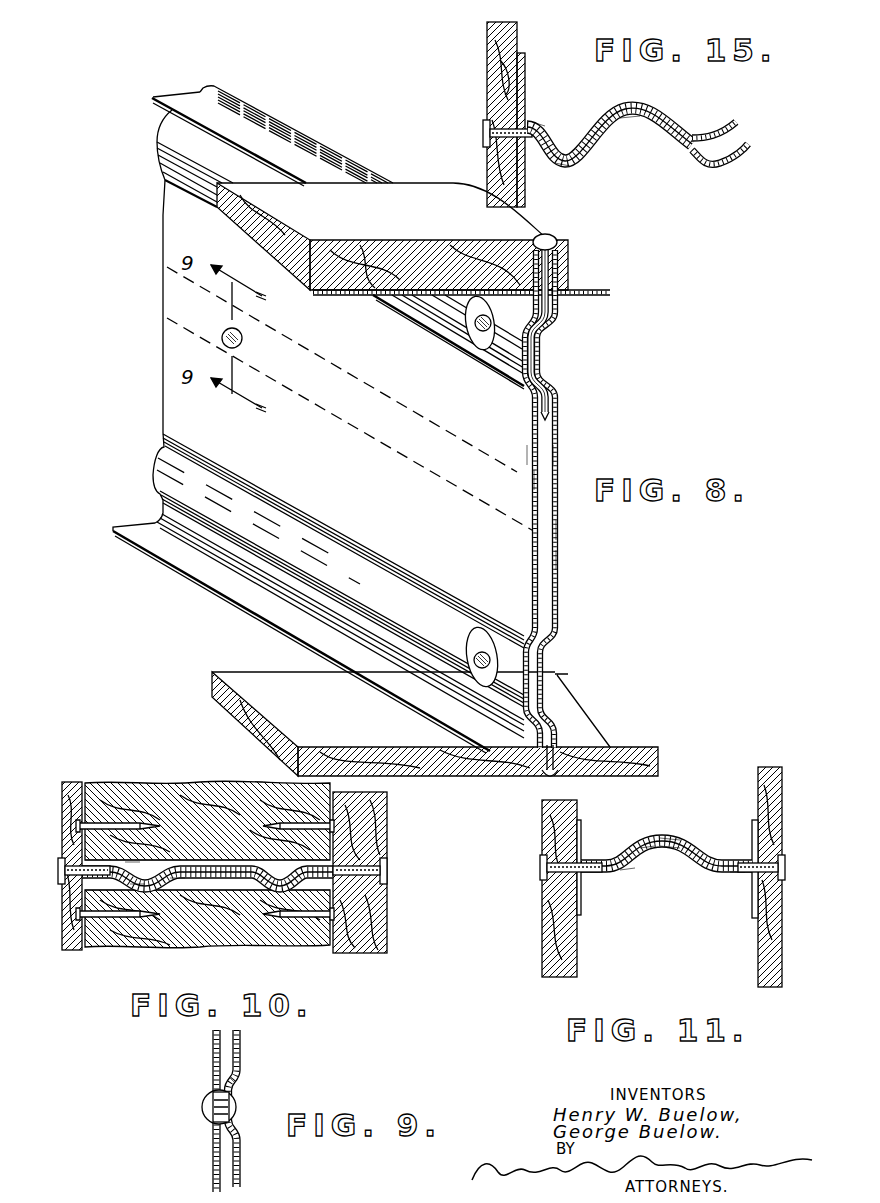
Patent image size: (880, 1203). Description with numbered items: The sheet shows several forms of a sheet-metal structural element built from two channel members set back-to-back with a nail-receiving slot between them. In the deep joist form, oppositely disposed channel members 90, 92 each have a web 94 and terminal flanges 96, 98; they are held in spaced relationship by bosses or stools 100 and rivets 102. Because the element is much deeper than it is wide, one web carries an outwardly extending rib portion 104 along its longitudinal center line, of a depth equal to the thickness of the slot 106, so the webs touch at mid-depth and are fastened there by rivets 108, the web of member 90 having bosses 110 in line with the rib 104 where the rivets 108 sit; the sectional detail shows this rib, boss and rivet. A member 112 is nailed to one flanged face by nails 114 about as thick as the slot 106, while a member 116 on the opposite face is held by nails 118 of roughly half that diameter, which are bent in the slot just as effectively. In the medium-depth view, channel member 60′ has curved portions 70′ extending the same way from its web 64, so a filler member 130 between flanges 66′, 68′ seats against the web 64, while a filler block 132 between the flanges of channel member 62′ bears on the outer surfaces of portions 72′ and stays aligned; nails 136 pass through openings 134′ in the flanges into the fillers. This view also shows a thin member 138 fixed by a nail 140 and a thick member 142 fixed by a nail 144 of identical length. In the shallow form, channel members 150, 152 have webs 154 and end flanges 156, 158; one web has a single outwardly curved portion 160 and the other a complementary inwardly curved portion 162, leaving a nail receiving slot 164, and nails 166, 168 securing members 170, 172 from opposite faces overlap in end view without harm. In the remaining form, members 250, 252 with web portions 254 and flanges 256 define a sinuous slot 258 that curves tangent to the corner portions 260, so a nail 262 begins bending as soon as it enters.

In FIG. 8, the channel member 90 is at (558, 435).
In FIG. 9, the channel member 90 is at (243, 1164).
In FIG. 8, the channel member 92 is at (531, 433).
In FIG. 9, the channel member 92 is at (212, 1174).
In FIG. 8, the web 94 is at (532, 452).
In FIG. 9, the web 94 is at (212, 1050).
In FIG. 8, the terminal flange 96 is at (580, 297).
In FIG. 8, the terminal flange 98 is at (612, 746).
In FIG. 8, the boss or stool 100 is at (478, 344).
In FIG. 8, the rivet 102 is at (477, 326).
In FIG. 8, the rib portion 104 is at (549, 534).
In FIG. 8, the slot 106 is at (538, 475).
In FIG. 8, the rivet 108 is at (242, 339).
In FIG. 9, the rivet 108 is at (236, 1101).
In FIG. 9, the boss 110 is at (214, 1080).
In FIG. 8, the member 112 is at (392, 236).
In FIG. 8, the nail 114 is at (566, 256).
In FIG. 8, the member 116 is at (583, 700).
In FIG. 8, the nail 118 is at (558, 776).
In FIG. 10, the filler member 130 is at (176, 812).
In FIG. 10, the filler block 132 is at (176, 950).
In FIG. 10, the opening 134′ is at (75, 914).
In FIG. 10, the nail 136 is at (100, 946).
In FIG. 10, the thin member 138 is at (62, 806).
In FIG. 10, the nail 140 is at (58, 873).
In FIG. 10, the thick member 142 is at (388, 931).
In FIG. 10, the nail 144 is at (388, 869).
In FIG. 11, the channel member 150 is at (660, 834).
In FIG. 11, the channel member 152 is at (671, 868).
In FIG. 11, the web 154 is at (700, 859).
In FIG. 11, the end flange 156 is at (581, 827).
In FIG. 11, the end flange 158 is at (755, 822).
In FIG. 11, the outwardly curved portion 160 is at (628, 875).
In FIG. 11, the inwardly curved portion 162 is at (649, 846).
In FIG. 11, the nail receiving slot 164 is at (690, 838).
In FIG. 11, the nail 166 is at (540, 869).
In FIG. 11, the nail 168 is at (785, 868).
In FIG. 11, the member 170 is at (548, 953).
In FIG. 11, the member 172 is at (758, 968).
In FIG. 10, the channel member 60′ is at (198, 846).
In FIG. 10, the channel member 62′ is at (206, 884).
In FIG. 10, the web 64 is at (236, 832).
In FIG. 10, the flange 66′ is at (88, 808).
In FIG. 10, the flange 68′ is at (337, 808).
In FIG. 10, the curved portion 70′ is at (133, 832).
In FIG. 10, the portion 72′ is at (135, 946).
In FIG. 15, the member 250 is at (621, 108).
In FIG. 15, the member 252 is at (632, 151).
In FIG. 15, the web portion 254 is at (672, 115).
In FIG. 15, the flange 256 is at (527, 86).
In FIG. 15, the sinuous slot 258 is at (561, 165).
In FIG. 15, the curved corner portion 260 is at (538, 122).
In FIG. 15, the nail 262 is at (483, 133).